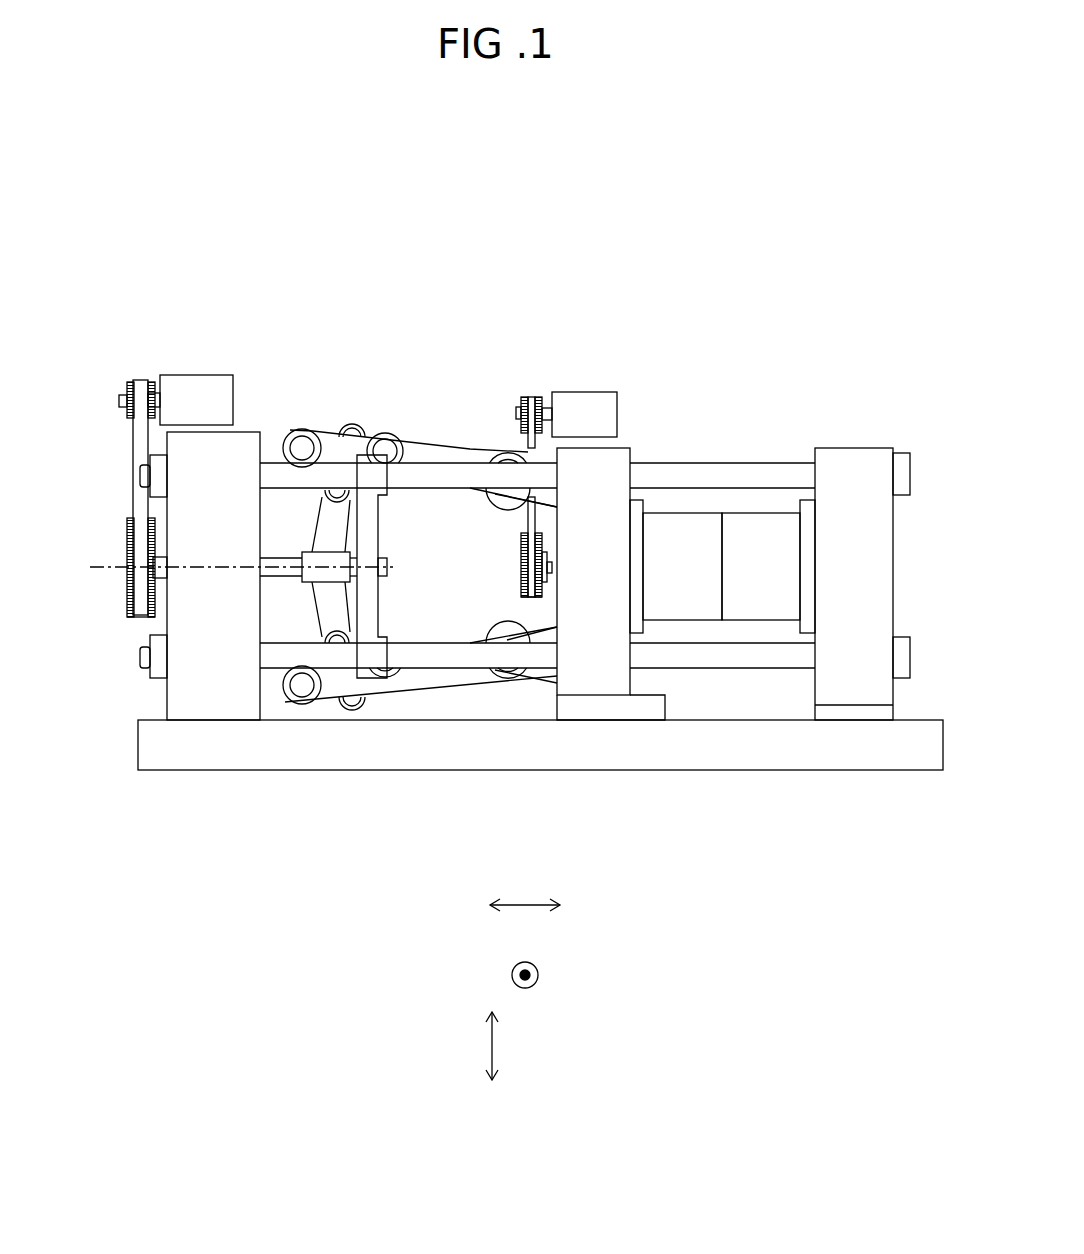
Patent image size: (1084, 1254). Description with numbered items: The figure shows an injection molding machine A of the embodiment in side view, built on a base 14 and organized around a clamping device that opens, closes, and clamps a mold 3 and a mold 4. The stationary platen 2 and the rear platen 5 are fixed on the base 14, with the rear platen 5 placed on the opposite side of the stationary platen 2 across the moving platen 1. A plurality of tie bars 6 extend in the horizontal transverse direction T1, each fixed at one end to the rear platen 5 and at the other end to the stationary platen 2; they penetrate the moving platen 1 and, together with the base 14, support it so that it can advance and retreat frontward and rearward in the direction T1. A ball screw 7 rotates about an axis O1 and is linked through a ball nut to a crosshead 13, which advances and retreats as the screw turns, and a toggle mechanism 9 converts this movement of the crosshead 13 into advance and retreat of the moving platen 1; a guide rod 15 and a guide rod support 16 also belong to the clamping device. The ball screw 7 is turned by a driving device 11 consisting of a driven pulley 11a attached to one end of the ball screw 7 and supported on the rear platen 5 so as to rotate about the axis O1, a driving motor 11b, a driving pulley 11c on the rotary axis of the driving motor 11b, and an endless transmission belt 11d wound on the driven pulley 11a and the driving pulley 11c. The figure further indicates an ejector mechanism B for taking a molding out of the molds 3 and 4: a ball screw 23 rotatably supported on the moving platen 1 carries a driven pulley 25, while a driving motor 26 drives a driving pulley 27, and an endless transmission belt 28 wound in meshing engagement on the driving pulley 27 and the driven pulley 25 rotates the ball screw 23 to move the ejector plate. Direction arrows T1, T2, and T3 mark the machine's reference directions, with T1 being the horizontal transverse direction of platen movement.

The moving platen 1 is at (597, 680).
The stationary platen 2 is at (855, 680).
The mold 3 is at (763, 528).
The mold 4 is at (681, 528).
The rear platen 5 is at (208, 700).
The tie bars 6 is at (472, 470).
The ball screw 7 is at (323, 694).
The toggle mechanism 9 is at (377, 408).
The driving device 11 is at (172, 466).
The driven pulley 11a is at (128, 596).
The driving motor 11b is at (172, 360).
The driving pulley 11c is at (132, 382).
The endless transmission belt 11d is at (137, 442).
The crosshead 13 is at (328, 560).
The base 14 is at (710, 753).
The guide rod 15 is at (282, 572).
The guide rod support 16 is at (368, 602).
The ball screw 23 is at (551, 572).
The driven pulley 25 is at (523, 585).
The driving motor 26 is at (584, 392).
The driving pulley 27 is at (541, 397).
The endless transmission belt 28 is at (533, 523).
The injection molding machine A is at (703, 282).
The ejector mechanism B is at (537, 378).
The axis O1 is at (227, 566).
The horizontal transverse direction T1 is at (525, 921).
The second direction T2 is at (537, 968).
The third direction T3 is at (474, 1046).